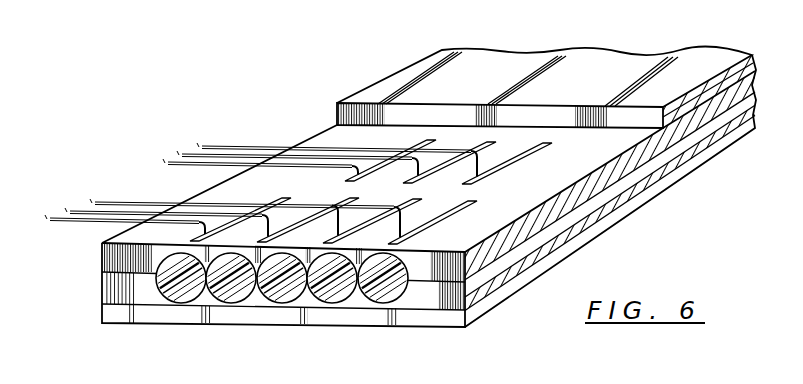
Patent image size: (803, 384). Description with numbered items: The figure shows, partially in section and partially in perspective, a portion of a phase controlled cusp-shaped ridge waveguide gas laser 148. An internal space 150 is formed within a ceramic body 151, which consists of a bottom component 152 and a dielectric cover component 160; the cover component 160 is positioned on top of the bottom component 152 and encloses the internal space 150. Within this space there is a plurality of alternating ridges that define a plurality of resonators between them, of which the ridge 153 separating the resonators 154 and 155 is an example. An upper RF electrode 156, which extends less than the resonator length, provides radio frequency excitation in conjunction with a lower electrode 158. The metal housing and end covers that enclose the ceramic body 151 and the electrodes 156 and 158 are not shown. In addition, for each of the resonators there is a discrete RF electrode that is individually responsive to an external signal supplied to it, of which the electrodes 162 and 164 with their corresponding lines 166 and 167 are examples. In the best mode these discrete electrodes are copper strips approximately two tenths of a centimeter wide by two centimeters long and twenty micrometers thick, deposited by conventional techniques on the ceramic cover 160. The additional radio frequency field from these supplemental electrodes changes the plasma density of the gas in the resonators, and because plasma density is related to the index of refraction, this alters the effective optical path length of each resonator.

The phase controlled cusp-shaped ridge waveguide gas laser 148 is at (386, 191).
The internal space 150 is at (420, 306).
The ceramic body 151 is at (84, 290).
The bottom component 152 is at (102, 270).
The ridge 153 is at (207, 292).
The resonator 154 is at (176, 298).
The resonator 155 is at (233, 298).
The upper RF electrode 156 is at (641, 58).
The lower electrode 158 is at (451, 322).
The dielectric cover component 160 is at (323, 136).
The discrete RF electrode 162 is at (470, 202).
The discrete RF electrode 164 is at (548, 144).
The line 166 is at (404, 222).
The line 167 is at (478, 164).